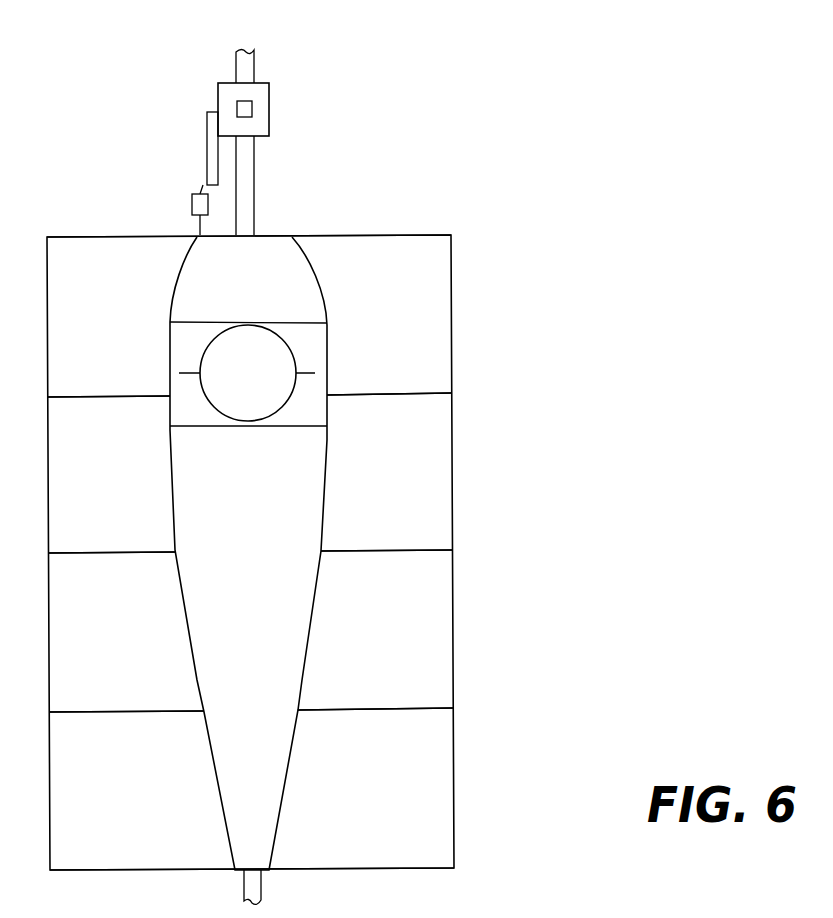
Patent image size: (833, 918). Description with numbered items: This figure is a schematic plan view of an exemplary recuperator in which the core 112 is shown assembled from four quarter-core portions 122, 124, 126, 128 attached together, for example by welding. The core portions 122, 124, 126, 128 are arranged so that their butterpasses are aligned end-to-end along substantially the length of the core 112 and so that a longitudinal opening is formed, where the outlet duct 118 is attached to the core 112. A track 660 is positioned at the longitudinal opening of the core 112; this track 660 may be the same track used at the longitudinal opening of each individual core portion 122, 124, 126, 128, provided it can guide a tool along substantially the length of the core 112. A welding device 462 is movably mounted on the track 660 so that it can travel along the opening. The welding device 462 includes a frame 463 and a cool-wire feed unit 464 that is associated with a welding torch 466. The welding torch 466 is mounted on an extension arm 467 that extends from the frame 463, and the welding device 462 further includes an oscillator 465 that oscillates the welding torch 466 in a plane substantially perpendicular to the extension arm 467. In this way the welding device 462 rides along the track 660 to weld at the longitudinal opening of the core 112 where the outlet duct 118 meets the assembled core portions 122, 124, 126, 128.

The core 112 is at (473, 527).
The outlet duct 118 is at (272, 565).
The quarter-core portion 122 is at (407, 803).
The quarter-core portion 124 is at (405, 644).
The quarter-core portion 126 is at (405, 476).
The quarter-core portion 128 is at (405, 321).
The welding device 462 is at (202, 82).
The frame 463 is at (270, 85).
The cool-wire feed unit 464 is at (203, 193).
The oscillator 465 is at (252, 108).
The welding torch 466 is at (198, 236).
The extension arm 467 is at (207, 132).
The track 660 is at (255, 217).